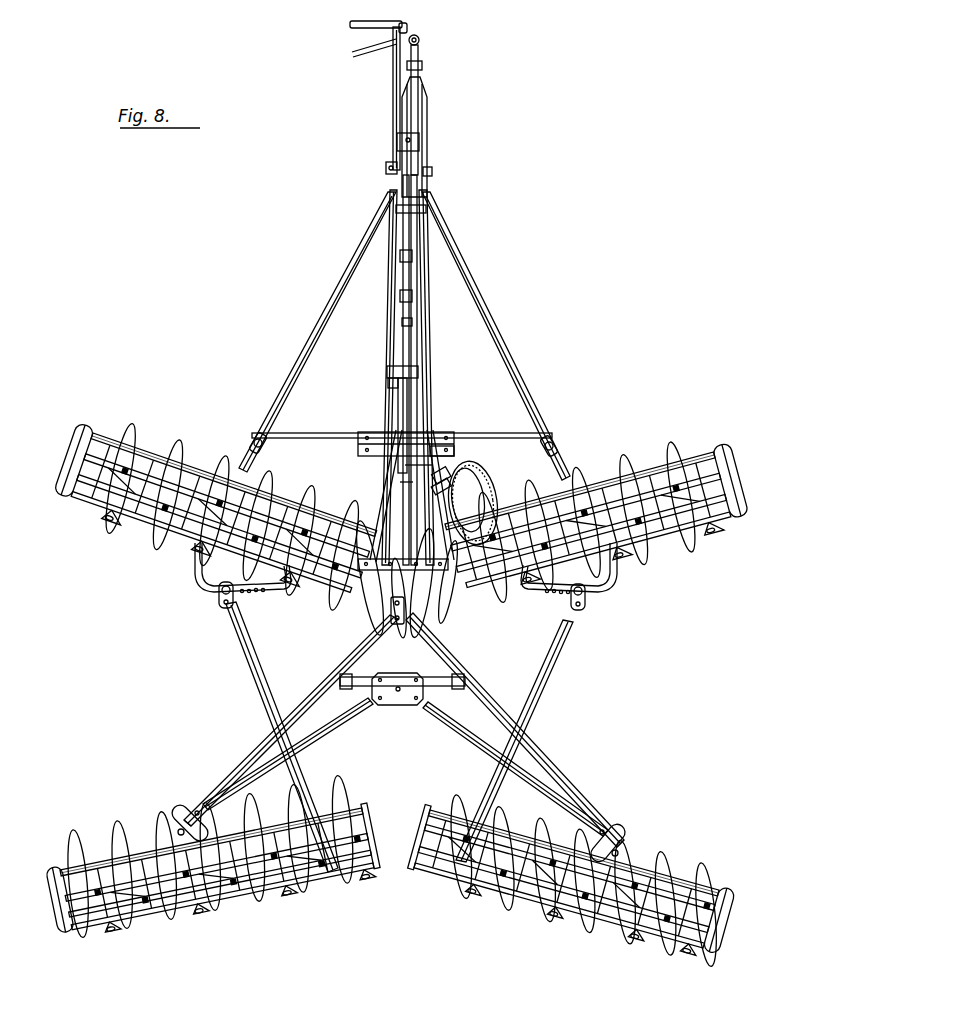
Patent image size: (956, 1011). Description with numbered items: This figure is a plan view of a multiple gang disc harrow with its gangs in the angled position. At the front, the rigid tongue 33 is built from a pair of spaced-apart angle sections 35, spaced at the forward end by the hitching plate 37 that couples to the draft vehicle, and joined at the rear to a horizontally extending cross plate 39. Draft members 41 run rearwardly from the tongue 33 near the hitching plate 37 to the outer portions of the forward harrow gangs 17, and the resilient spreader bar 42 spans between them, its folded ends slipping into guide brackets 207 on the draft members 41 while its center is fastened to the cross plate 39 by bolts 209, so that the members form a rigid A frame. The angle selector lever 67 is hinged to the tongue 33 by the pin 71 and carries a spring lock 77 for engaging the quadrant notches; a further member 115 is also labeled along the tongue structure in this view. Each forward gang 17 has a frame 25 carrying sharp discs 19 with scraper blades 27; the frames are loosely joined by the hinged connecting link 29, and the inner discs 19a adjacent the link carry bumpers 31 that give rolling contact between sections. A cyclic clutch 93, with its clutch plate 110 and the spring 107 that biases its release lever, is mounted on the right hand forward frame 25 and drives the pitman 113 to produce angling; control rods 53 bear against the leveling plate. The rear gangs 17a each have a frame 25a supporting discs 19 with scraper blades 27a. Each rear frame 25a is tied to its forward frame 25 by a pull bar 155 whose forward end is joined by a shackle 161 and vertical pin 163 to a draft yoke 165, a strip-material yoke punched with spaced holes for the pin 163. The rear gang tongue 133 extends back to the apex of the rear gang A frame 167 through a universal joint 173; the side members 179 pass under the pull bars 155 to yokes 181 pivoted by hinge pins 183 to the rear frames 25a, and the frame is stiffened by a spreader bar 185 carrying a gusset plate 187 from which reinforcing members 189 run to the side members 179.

The angle selector lever 67 is at (394, 64).
The hitching plate 37 is at (420, 72).
The tongue 33 is at (429, 100).
The angle sections 35 is at (412, 157).
The spring lock 77 is at (385, 168).
The pin or bolt 71 is at (432, 172).
The draft members 41 is at (328, 312).
The mast 115 is at (395, 279).
The pitman 113 is at (415, 386).
The cross plate 39 is at (435, 436).
The spreader bar 42 is at (347, 414).
The guide brackets 207 is at (255, 441).
The bolts 209 is at (360, 448).
The clutch plate 110 is at (488, 458).
The cyclic clutch 93 is at (480, 480).
The control rods 53 is at (404, 466).
The rear gang tongue 133 is at (399, 482).
The connecting link 29 is at (386, 540).
The bumper 31 is at (410, 558).
The discs 19 is at (176, 453).
The inner discs 19a is at (365, 613).
The frame 25 is at (96, 501).
The harrow gangs 17 is at (410, 508).
The scraper blade 27 is at (168, 545).
The draft yokes 165 is at (200, 582).
The pin 163 is at (221, 595).
The shackle 161 is at (222, 604).
The spring 107 is at (255, 594).
The pull bar 155 is at (245, 658).
The universal joint 173 is at (398, 626).
The spreader bar 185 is at (438, 676).
The side members 179 is at (317, 692).
The gusset plate 187 is at (394, 703).
The rear gang A frame 167 is at (436, 742).
The reinforcing members 189 is at (333, 724).
The yoke 181 is at (188, 815).
The hinge pin 183 is at (178, 826).
The frame 25a is at (250, 892).
The rear gangs 17a is at (390, 889).
The scraper blade 27a is at (142, 934).